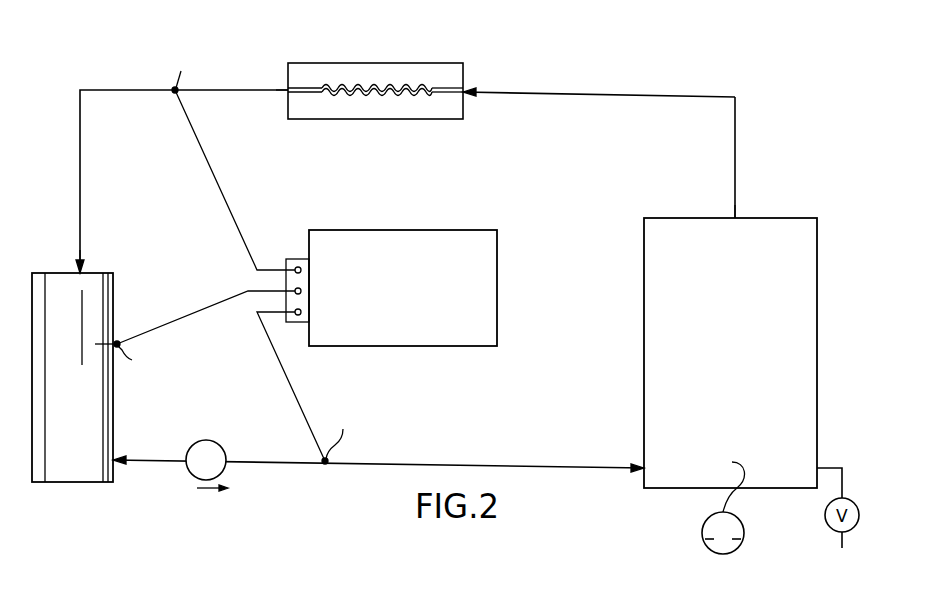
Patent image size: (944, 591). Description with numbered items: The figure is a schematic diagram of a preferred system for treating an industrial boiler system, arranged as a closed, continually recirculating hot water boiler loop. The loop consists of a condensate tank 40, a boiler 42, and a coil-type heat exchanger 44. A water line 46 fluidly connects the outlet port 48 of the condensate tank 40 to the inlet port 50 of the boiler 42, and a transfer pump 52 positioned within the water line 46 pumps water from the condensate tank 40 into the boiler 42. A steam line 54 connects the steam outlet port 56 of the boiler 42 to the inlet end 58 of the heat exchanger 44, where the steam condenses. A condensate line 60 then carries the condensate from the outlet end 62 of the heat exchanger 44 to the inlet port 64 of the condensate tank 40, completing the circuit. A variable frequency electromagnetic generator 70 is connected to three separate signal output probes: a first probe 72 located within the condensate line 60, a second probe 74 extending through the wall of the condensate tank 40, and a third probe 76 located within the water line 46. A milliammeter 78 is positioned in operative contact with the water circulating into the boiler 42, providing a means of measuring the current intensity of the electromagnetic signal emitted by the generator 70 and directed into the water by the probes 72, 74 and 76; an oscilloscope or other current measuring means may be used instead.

The condensate tank 40 is at (83, 479).
The boiler 42 is at (644, 278).
The heat exchanger 44 is at (348, 63).
The water line 46 is at (297, 465).
The outlet port 48 is at (113, 458).
The inlet port 50 is at (640, 463).
The transfer pump 52 is at (224, 448).
The steam line 54 is at (650, 96).
The steam outlet port 56 is at (736, 216).
The inlet end 58 is at (472, 90).
The condensate line 60 is at (80, 95).
The outlet end 62 is at (288, 92).
The inlet port 64 is at (82, 271).
The variable frequency electromagnetic generator 70 is at (450, 240).
The first probe 72 is at (174, 93).
The second probe 74 is at (118, 341).
The third probe 76 is at (326, 464).
The milliammeter 78 is at (702, 529).